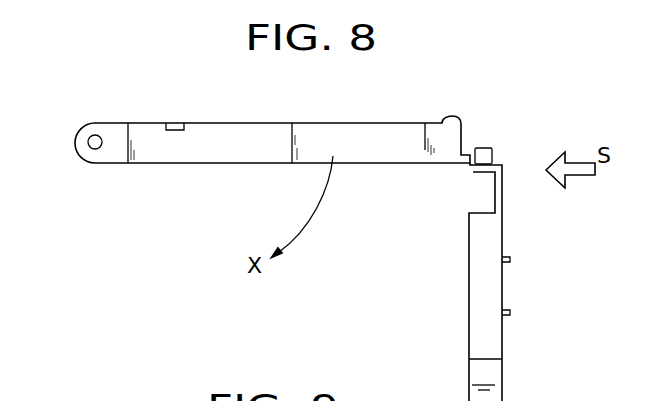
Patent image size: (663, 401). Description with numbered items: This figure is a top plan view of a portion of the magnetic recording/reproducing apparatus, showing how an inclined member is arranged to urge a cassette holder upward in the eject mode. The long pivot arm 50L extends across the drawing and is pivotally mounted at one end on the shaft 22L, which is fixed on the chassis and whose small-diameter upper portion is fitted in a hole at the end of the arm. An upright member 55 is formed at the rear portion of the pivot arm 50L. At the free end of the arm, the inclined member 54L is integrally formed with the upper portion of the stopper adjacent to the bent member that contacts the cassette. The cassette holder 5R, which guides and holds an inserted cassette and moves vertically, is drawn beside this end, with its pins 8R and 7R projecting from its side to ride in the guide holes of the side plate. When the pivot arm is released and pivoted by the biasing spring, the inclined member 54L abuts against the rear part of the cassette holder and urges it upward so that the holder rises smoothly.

The pivot arm 50L is at (267, 128).
The shaft 22L is at (92, 140).
The upright member 55 is at (173, 123).
The inclined member 54L is at (483, 148).
The cassette holder 5R is at (497, 277).
The pin 8R is at (508, 258).
The pin 7R is at (508, 315).